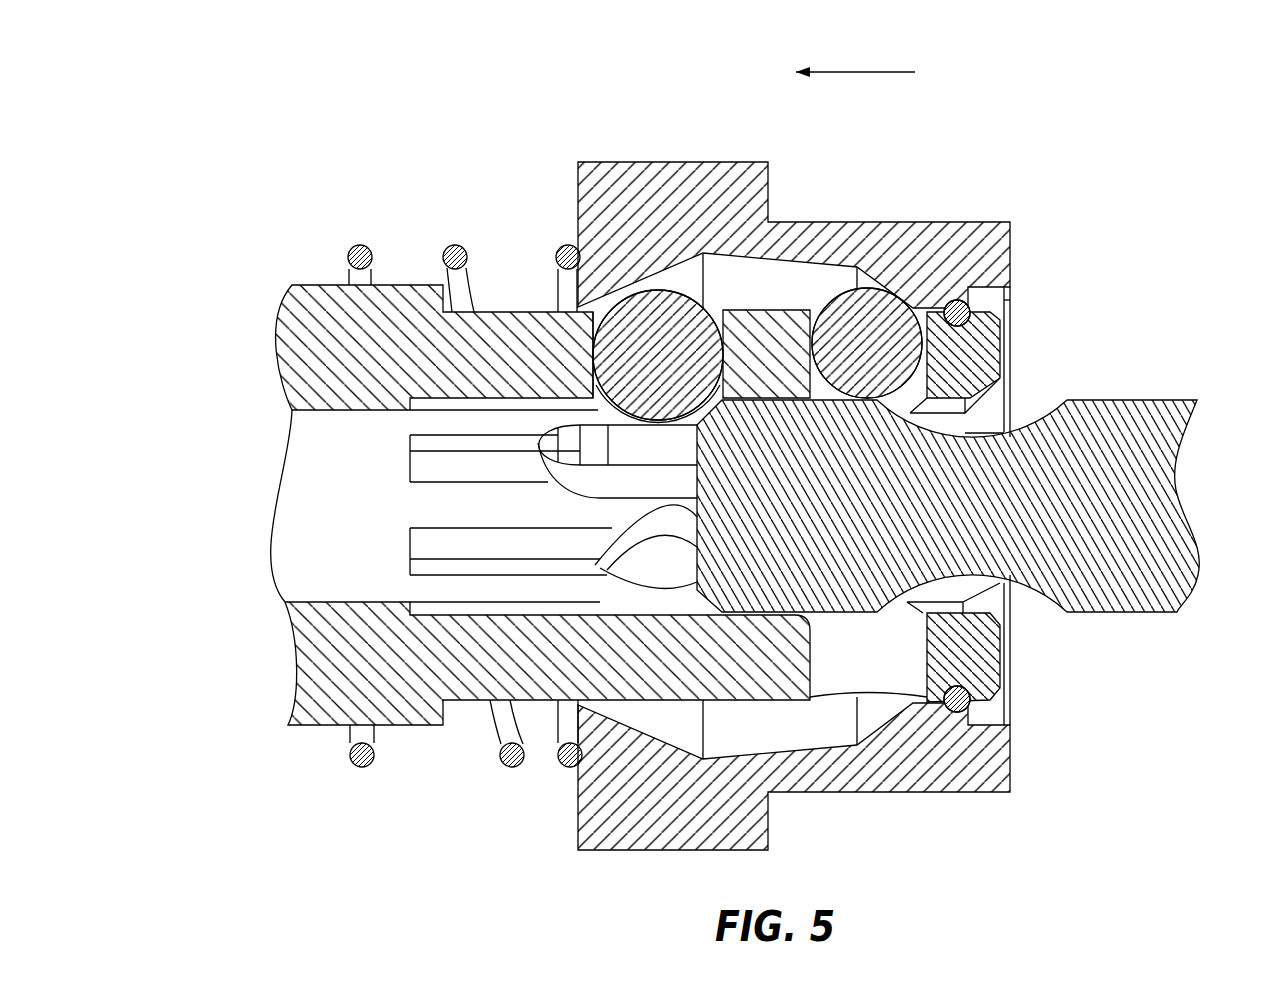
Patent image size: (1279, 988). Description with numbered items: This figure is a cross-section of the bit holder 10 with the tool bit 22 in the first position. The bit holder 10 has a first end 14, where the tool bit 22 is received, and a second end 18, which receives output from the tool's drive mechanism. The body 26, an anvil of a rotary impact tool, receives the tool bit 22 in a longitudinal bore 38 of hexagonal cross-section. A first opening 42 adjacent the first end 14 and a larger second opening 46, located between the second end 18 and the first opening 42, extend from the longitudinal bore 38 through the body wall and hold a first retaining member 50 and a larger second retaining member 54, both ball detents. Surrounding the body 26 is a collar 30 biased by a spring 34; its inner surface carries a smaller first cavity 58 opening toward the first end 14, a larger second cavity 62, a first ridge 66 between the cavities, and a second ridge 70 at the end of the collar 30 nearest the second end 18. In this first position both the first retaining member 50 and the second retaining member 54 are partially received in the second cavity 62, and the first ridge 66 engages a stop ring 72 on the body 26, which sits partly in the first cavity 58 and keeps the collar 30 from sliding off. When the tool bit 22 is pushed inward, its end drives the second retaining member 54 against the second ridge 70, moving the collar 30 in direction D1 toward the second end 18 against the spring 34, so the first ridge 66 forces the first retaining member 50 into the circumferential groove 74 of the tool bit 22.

The bit holder 10 is at (699, 481).
The first end 14 is at (948, 507).
The second end 18 is at (639, 481).
The tool bit 22 is at (1096, 436).
The body 26 is at (543, 682).
The collar 30 is at (794, 481).
The spring 34 is at (452, 262).
The longitudinal bore 38 is at (470, 469).
The first opening 42 is at (862, 668).
The second opening 46 is at (480, 548).
The first retaining member 50 is at (855, 322).
The second retaining member 54 is at (603, 347).
The first cavity 58 is at (990, 297).
The second cavity 62 is at (753, 284).
The first ridge 66 is at (937, 300).
The second ridge 70 is at (633, 353).
The stop ring 72 is at (960, 300).
The circumferential groove 74 is at (975, 438).
The direction D1 is at (903, 72).